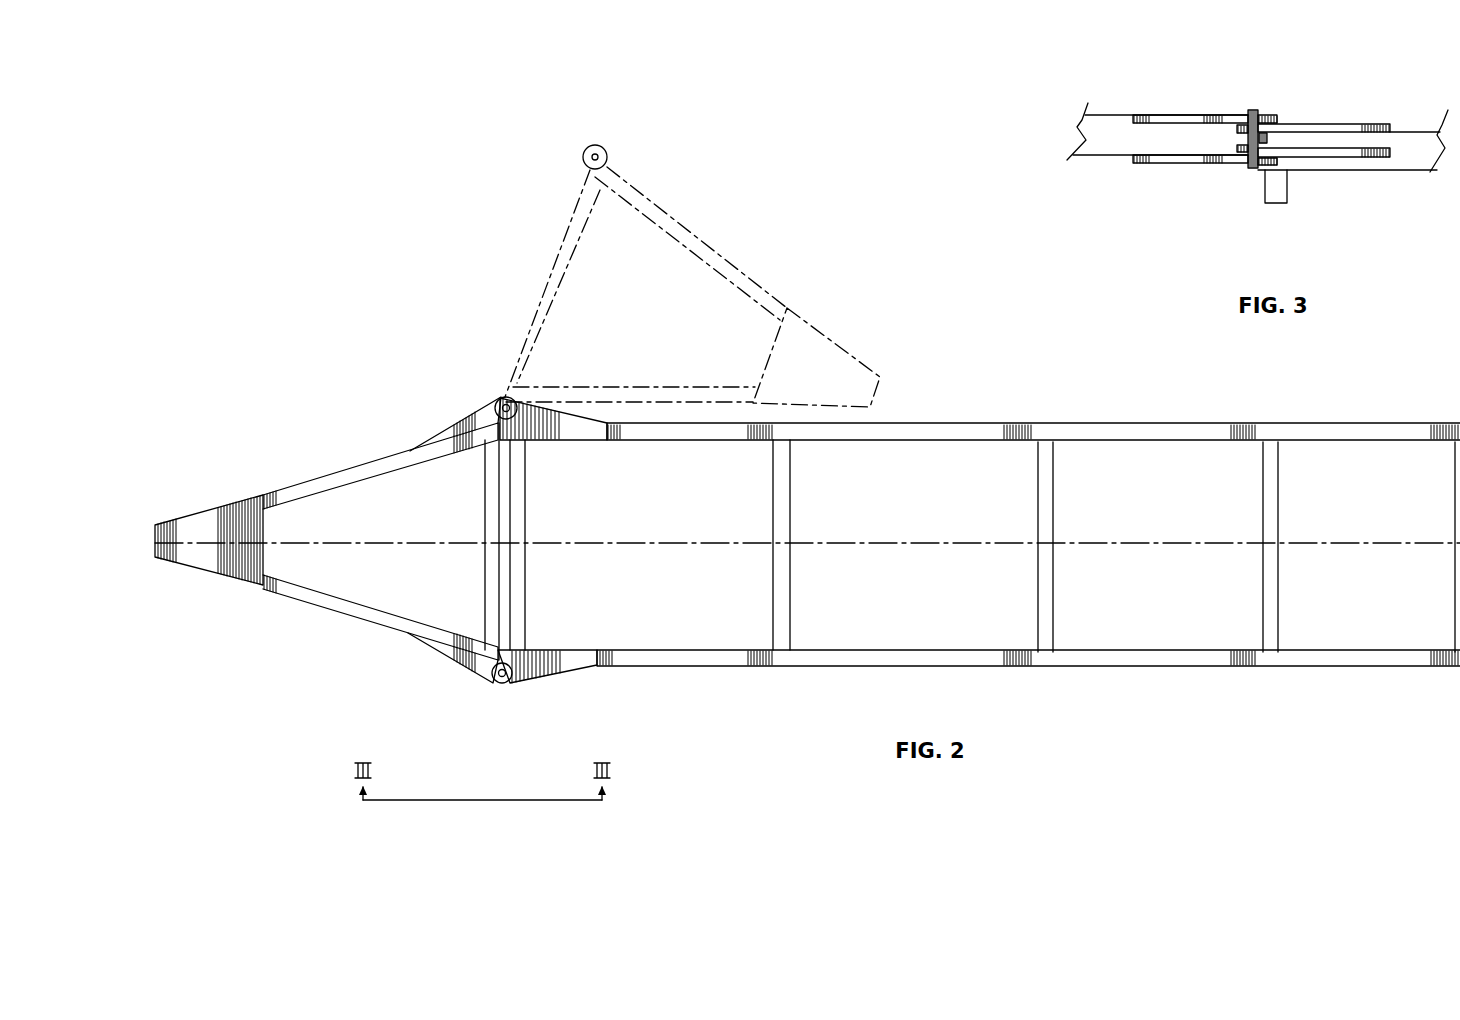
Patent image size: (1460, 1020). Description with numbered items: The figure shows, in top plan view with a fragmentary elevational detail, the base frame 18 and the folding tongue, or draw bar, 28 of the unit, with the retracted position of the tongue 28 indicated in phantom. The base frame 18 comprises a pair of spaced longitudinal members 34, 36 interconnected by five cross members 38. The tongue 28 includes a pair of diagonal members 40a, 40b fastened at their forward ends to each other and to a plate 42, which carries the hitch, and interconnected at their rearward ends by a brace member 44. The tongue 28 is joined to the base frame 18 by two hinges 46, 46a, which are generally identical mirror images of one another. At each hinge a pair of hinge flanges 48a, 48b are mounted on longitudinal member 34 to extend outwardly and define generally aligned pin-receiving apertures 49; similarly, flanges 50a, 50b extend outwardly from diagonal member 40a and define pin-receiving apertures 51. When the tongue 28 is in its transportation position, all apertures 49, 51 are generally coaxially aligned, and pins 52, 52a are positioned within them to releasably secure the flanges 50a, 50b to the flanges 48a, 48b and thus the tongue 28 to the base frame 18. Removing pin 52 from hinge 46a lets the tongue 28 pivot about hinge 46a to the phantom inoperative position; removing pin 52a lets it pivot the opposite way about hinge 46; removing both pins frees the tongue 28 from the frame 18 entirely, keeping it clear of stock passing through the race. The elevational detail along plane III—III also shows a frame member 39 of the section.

In FIG. 2, the base frame 18 is at (972, 421).
In FIG. 2, the tongue 28 is at (352, 619).
In FIG. 2, the longitudinal member 34 is at (1180, 658).
In FIG. 2, the longitudinal member 36 is at (1208, 435).
In FIG. 2, the cross member 38 is at (518, 493).
In FIG. 3, the cross member 38 is at (1280, 200).
In FIG. 3, the frame beam 39 is at (1413, 155).
In FIG. 2, the diagonal member 40a is at (385, 613).
In FIG. 3, the diagonal member 40a is at (1100, 148).
In FIG. 2, the diagonal member 40b is at (344, 475).
In FIG. 2, the plate 42 is at (208, 520).
In FIG. 2, the brace member 44 is at (492, 488).
In FIG. 2, the hinge 46 is at (441, 428).
In FIG. 2, the hinge 46a is at (521, 687).
In FIG. 3, the hinge 46a is at (1237, 112).
In FIG. 2, the hinge flange 48a is at (582, 433).
In FIG. 3, the hinge flange 48a is at (1343, 127).
In FIG. 3, the hinge flange 48b is at (1342, 148).
In FIG. 3, the pin-receiving aperture 49 is at (1264, 138).
In FIG. 2, the flange 50a is at (475, 423).
In FIG. 3, the flange 50a is at (1180, 118).
In FIG. 3, the flange 50b is at (1160, 160).
In FIG. 3, the pin-receiving aperture 51 is at (1257, 120).
In FIG. 2, the pin 52 is at (506, 397).
In FIG. 3, the pin 52 is at (1253, 112).
In FIG. 2, the pin 52a is at (498, 684).